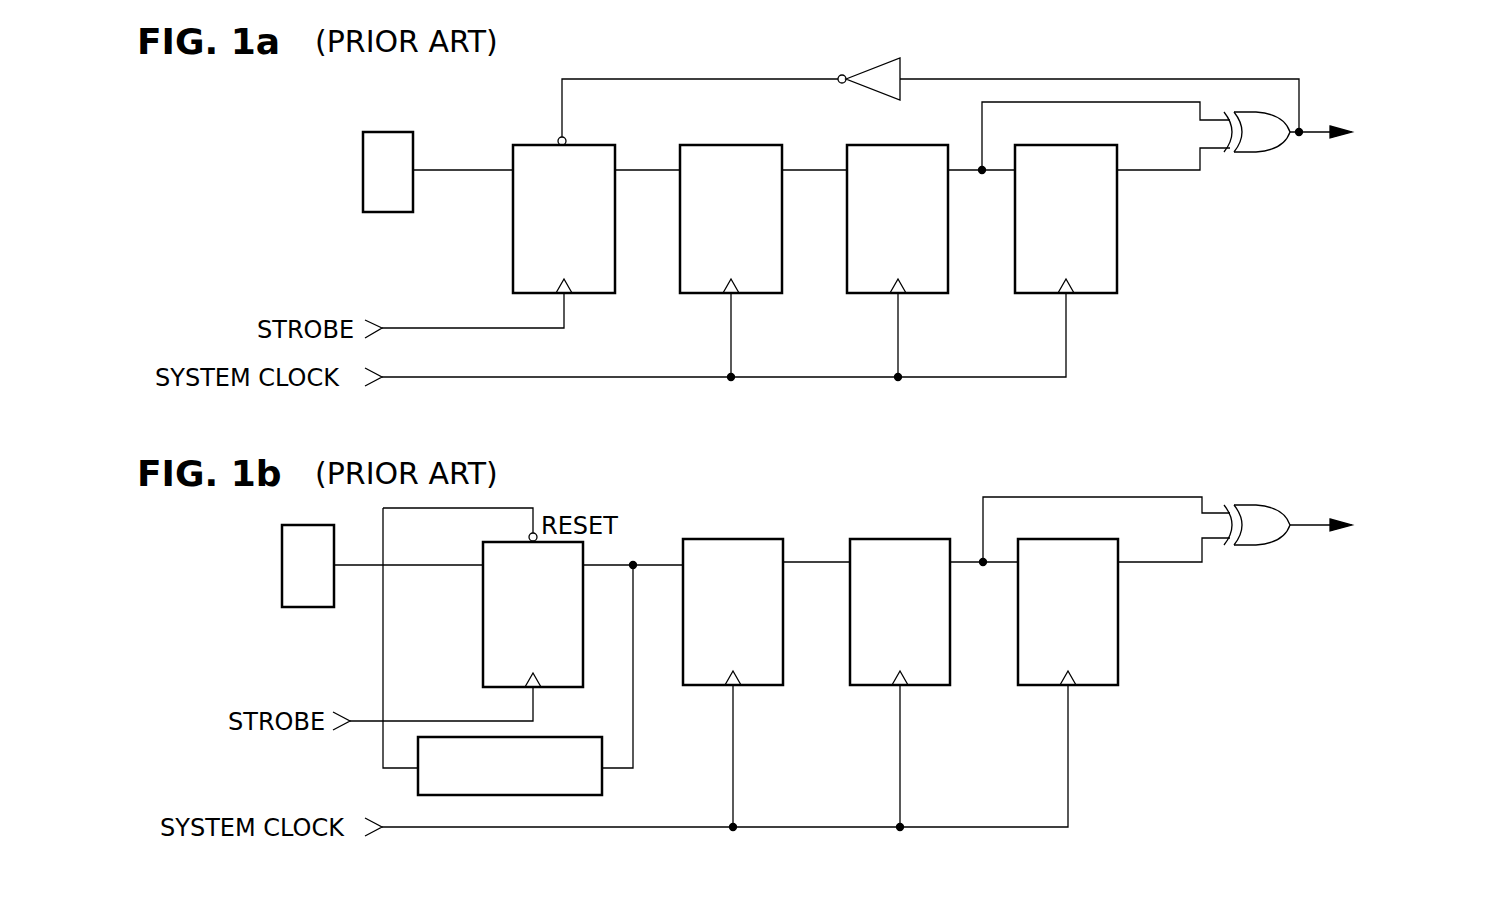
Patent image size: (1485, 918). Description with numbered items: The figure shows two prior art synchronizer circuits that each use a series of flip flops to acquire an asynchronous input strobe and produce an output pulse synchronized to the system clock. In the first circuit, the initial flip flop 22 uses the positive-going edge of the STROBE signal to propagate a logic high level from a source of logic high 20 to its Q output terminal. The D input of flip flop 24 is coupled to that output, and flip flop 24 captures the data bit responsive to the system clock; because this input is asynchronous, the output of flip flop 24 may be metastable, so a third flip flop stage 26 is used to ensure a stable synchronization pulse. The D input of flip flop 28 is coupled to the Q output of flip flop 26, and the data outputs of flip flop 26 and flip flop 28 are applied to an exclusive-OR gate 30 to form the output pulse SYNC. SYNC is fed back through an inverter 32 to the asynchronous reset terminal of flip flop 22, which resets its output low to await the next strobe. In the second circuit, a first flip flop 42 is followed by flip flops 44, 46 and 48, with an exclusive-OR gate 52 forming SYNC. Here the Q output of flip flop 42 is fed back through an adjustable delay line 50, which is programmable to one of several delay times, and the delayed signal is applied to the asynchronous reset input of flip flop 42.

In FIG. 1A, the source of logic high 20 is at (362, 156).
In FIG. 1B, the source of logic high 20 is at (281, 548).
In FIG. 1A, the flip flop 22 is at (594, 293).
In FIG. 1A, the flip flop 24 is at (760, 293).
In FIG. 1A, the third flip flop stage 26 is at (928, 293).
In FIG. 1A, the flip flop 28 is at (1096, 293).
In FIG. 1A, the exclusive-OR gate 30 is at (1250, 143).
In FIG. 1A, the inverter 32 is at (877, 70).
In FIG. 1B, the first flip flop 42 is at (488, 616).
In FIG. 1B, the flip flop 44 is at (757, 685).
In FIG. 1B, the flip flop 46 is at (930, 685).
In FIG. 1B, the flip flop 48 is at (1090, 685).
In FIG. 1B, the adjustable delay line 50 is at (600, 782).
In FIG. 1B, the exclusive-OR gate 52 is at (1258, 540).